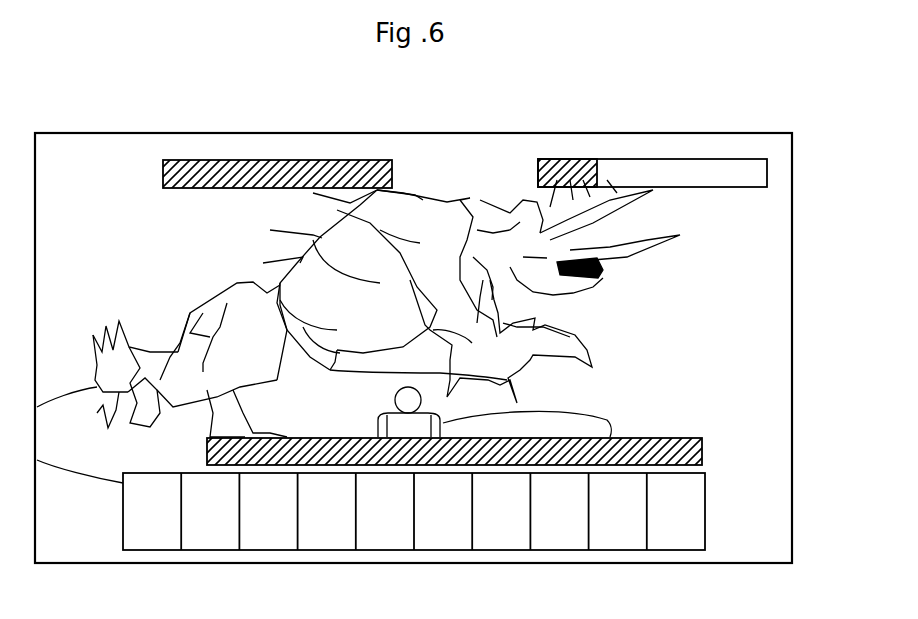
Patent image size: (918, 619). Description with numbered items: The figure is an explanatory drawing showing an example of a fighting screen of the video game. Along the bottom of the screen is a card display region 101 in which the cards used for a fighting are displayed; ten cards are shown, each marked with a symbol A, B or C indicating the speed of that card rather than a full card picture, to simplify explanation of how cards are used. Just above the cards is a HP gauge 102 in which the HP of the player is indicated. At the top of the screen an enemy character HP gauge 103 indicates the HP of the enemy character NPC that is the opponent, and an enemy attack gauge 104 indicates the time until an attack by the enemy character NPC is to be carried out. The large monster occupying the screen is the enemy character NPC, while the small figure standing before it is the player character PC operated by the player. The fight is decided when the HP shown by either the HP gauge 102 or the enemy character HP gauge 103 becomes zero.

The card display region 101 is at (713, 515).
The HP gauge 102 is at (702, 452).
The enemy character HP gauge 103 is at (336, 160).
The enemy attack gauge 104 is at (712, 159).
The enemy character NPC is at (658, 275).
The player character PC is at (400, 377).